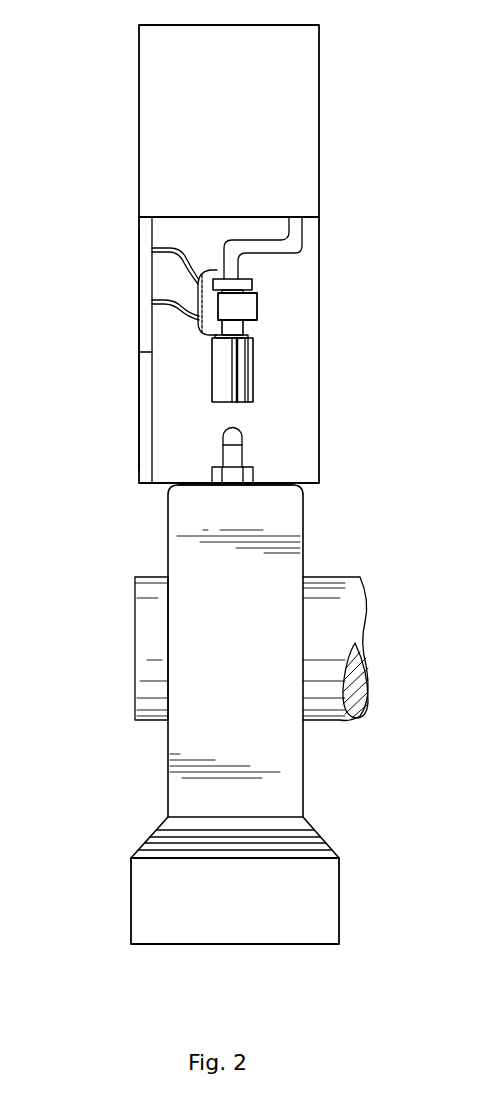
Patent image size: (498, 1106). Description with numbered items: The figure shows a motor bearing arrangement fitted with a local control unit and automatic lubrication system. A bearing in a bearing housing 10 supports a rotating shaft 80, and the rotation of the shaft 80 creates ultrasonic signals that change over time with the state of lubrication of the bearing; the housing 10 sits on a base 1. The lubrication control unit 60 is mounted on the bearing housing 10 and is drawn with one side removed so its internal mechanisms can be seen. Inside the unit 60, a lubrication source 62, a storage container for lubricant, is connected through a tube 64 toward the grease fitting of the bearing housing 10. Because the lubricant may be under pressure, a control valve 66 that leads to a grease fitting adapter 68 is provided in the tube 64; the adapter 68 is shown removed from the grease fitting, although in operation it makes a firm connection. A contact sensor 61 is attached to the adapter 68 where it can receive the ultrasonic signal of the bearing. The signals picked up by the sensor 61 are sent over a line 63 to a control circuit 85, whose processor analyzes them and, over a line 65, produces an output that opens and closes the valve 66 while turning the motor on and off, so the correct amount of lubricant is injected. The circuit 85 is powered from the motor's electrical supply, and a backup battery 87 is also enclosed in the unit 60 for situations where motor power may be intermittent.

The base 1 is at (303, 770).
The bearing housing 10 is at (168, 545).
The local control unit 60 is at (208, 254).
The contact sensor 61 is at (192, 300).
The lubrication source 62 is at (241, 121).
The line 63 is at (158, 248).
The tube 64 is at (305, 230).
The line 65 is at (168, 320).
The control valve 66 is at (258, 312).
The grease fitting adapter 68 is at (253, 372).
The shaft 80 is at (342, 577).
The control circuit 85 is at (139, 303).
The backup battery 87 is at (139, 450).